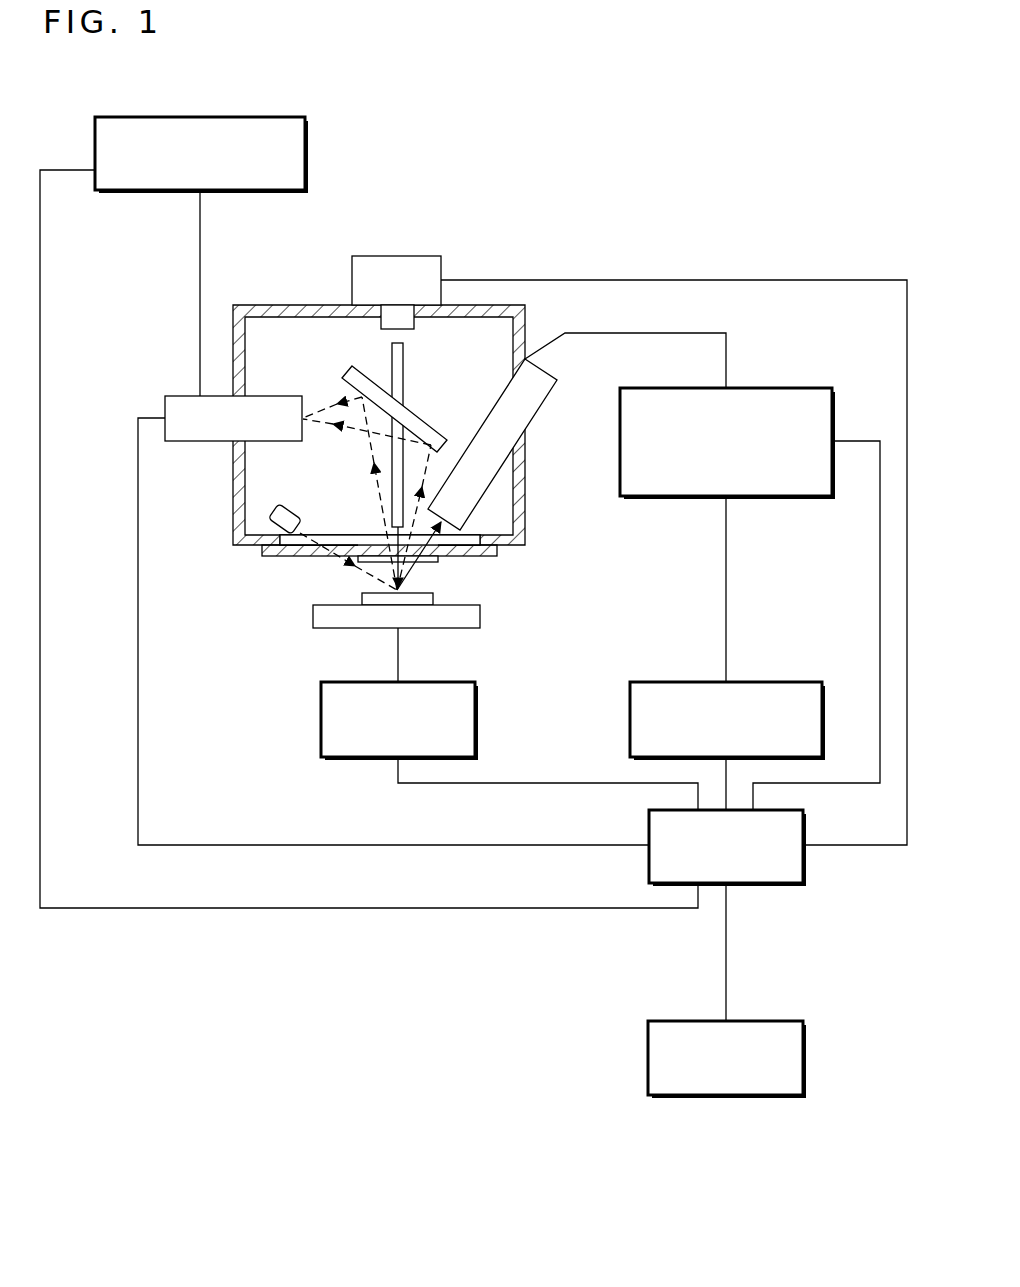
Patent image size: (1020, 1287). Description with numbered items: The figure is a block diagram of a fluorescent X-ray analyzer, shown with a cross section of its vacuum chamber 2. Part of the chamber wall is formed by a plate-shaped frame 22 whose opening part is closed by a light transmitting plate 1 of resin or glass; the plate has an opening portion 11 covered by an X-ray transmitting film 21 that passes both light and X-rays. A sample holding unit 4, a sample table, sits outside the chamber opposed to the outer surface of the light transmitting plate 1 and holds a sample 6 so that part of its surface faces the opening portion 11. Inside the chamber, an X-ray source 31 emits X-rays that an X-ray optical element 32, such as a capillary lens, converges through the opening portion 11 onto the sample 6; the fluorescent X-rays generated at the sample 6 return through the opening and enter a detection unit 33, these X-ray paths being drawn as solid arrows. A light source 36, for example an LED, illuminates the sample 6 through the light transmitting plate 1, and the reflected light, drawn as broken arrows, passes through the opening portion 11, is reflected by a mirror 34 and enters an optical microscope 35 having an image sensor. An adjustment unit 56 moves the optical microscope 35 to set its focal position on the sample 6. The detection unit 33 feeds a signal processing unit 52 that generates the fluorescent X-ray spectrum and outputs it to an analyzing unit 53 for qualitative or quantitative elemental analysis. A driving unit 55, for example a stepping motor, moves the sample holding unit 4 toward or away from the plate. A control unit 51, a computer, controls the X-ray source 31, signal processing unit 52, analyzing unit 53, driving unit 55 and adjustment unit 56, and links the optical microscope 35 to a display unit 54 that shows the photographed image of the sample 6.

The light transmitting plate 1 is at (285, 555).
The vacuum chamber 2 is at (294, 305).
The sample holding unit 4 is at (323, 628).
The sample 6 is at (362, 597).
The opening portion 11 is at (381, 547).
The X-ray transmitting film 21 is at (425, 560).
The frame 22 is at (250, 548).
The X-ray source 31 is at (372, 263).
The X-ray optical element 32 is at (397, 363).
The detection unit 33 is at (530, 407).
The mirror 34 is at (348, 368).
The optical microscope 35 is at (183, 403).
The light source 36 is at (283, 512).
The control unit 51 is at (757, 886).
The signal processing unit 52 is at (760, 388).
The analyzing unit 53 is at (760, 682).
The display unit 54 is at (748, 1021).
The driving unit 55 is at (477, 735).
The adjustment unit 56 is at (215, 117).